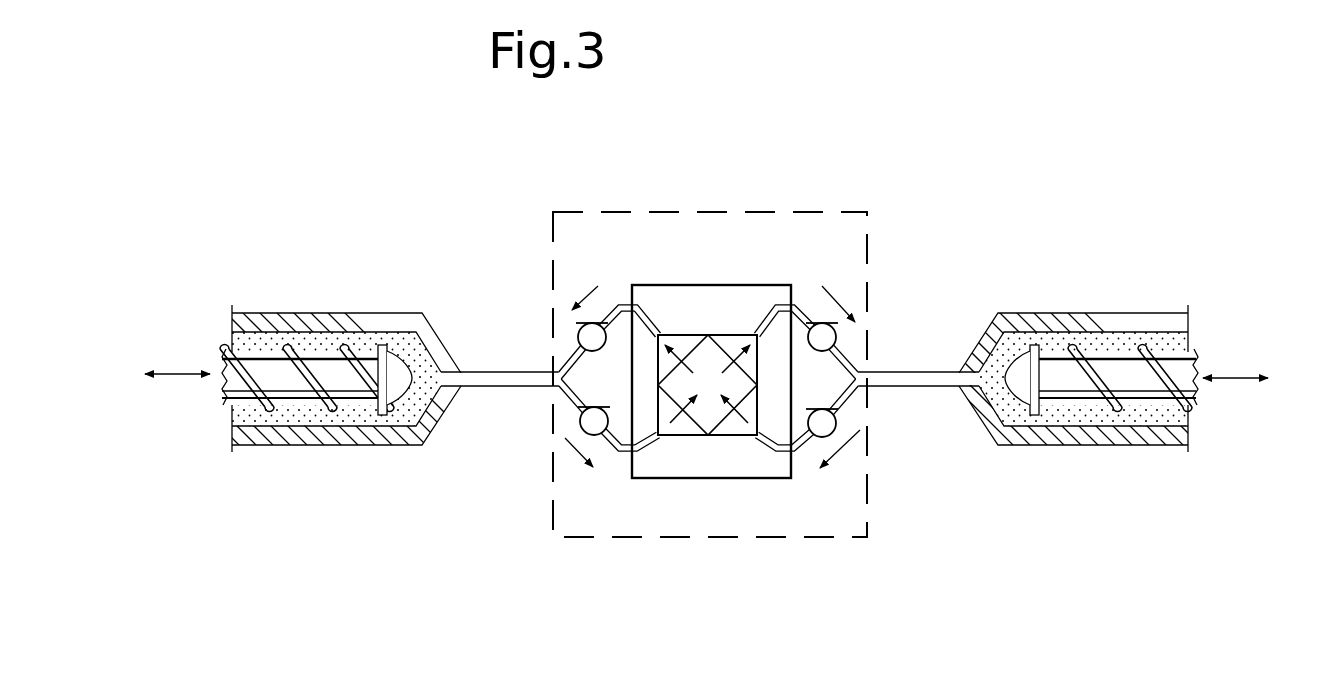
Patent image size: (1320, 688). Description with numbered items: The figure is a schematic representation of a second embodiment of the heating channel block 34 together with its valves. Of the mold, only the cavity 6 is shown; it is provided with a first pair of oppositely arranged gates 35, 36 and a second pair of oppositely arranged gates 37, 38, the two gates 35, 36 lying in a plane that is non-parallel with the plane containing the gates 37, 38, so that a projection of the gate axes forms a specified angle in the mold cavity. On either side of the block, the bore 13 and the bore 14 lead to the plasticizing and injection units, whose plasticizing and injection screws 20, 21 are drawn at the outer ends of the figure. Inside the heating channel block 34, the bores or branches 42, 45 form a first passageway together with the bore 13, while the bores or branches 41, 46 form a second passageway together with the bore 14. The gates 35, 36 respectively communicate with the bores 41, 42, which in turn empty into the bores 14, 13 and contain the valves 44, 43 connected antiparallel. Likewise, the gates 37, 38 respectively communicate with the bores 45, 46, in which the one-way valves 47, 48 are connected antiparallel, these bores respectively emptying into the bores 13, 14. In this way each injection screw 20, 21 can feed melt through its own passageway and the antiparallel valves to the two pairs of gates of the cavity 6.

The cavity 6 is at (709, 440).
The bore 13 is at (910, 372).
The bore 14 is at (485, 387).
The plasticizing and injection screw 20 is at (349, 376).
The plasticizing and injection screw 21 is at (1138, 376).
The heating channel block 34 is at (723, 212).
The gate 35 is at (645, 303).
The gate 36 is at (775, 452).
The gate 37 is at (772, 318).
The gate 38 is at (647, 452).
The bore 41 is at (570, 364).
The bore 42 is at (852, 402).
The valve 43 is at (825, 426).
The valve 44 is at (589, 338).
The bore 45 is at (851, 350).
The bore 46 is at (566, 392).
The one-way valve 47 is at (820, 332).
The one-way valve 48 is at (593, 421).